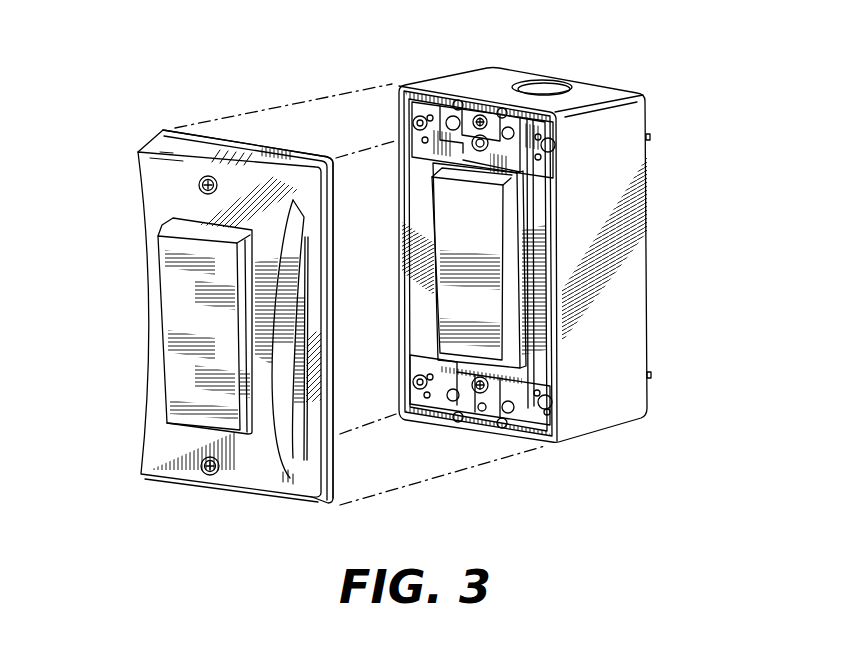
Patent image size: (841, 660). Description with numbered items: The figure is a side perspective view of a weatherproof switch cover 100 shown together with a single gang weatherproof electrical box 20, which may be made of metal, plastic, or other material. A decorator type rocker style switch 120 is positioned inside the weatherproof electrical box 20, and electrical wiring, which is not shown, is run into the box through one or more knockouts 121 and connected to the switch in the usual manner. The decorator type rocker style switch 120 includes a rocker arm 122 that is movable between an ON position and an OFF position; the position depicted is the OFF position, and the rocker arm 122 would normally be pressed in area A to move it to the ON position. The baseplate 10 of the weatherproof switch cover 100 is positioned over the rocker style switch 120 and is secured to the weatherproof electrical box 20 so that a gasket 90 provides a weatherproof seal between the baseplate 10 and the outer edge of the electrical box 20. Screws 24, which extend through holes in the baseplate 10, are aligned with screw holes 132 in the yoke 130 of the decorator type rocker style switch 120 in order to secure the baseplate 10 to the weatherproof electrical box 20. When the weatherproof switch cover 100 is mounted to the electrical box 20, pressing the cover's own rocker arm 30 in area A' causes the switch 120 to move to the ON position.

The weatherproof switch cover 100 is at (90, 498).
The baseplate 10 is at (147, 153).
The gasket 90 is at (288, 152).
The screws 24 is at (209, 182).
The rocker arm 30 is at (197, 345).
The weatherproof electrical box 20 is at (505, 78).
The knockouts 121 is at (540, 82).
The decorator type rocker style switch 120 is at (510, 222).
The rocker arm 122 is at (485, 292).
The yoke 130 is at (498, 376).
The screw holes 132 is at (468, 124).